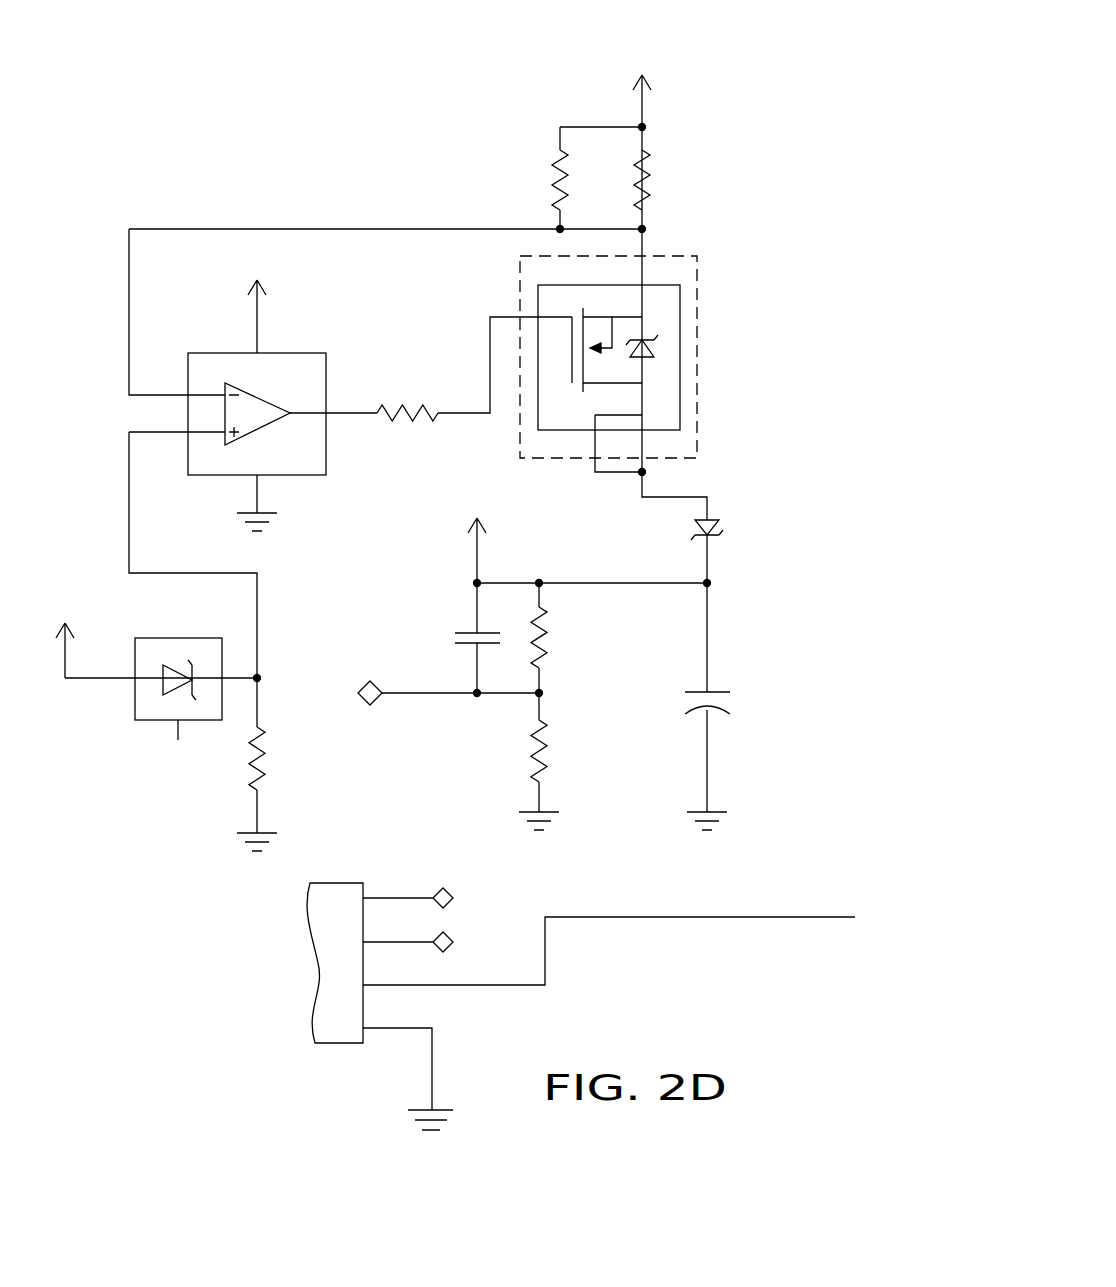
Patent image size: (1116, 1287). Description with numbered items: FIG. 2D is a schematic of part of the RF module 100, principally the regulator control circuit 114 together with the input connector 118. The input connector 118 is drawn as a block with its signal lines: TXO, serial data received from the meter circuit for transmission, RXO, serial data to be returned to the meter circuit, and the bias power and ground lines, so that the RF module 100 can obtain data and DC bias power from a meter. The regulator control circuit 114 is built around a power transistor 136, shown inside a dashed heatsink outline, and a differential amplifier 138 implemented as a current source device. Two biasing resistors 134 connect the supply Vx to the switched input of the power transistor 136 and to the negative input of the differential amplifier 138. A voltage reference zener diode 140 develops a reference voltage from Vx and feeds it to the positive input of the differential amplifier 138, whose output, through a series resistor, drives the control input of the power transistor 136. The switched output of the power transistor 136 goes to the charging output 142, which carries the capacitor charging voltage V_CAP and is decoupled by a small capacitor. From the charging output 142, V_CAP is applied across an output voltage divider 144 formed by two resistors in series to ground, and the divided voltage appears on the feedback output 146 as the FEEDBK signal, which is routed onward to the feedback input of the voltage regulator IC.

The RF module 100 is at (225, 157).
The biasing resistors 134 is at (558, 157).
The regulator control circuit 114 is at (740, 277).
The power transistor 136 is at (697, 340).
The differential amplifier 138 is at (288, 475).
The voltage reference zener diode 140 is at (163, 720).
The charging output 142 is at (478, 582).
The output voltage divider 144 is at (607, 692).
The feedback output 146 is at (507, 695).
The input connector 118 is at (337, 882).